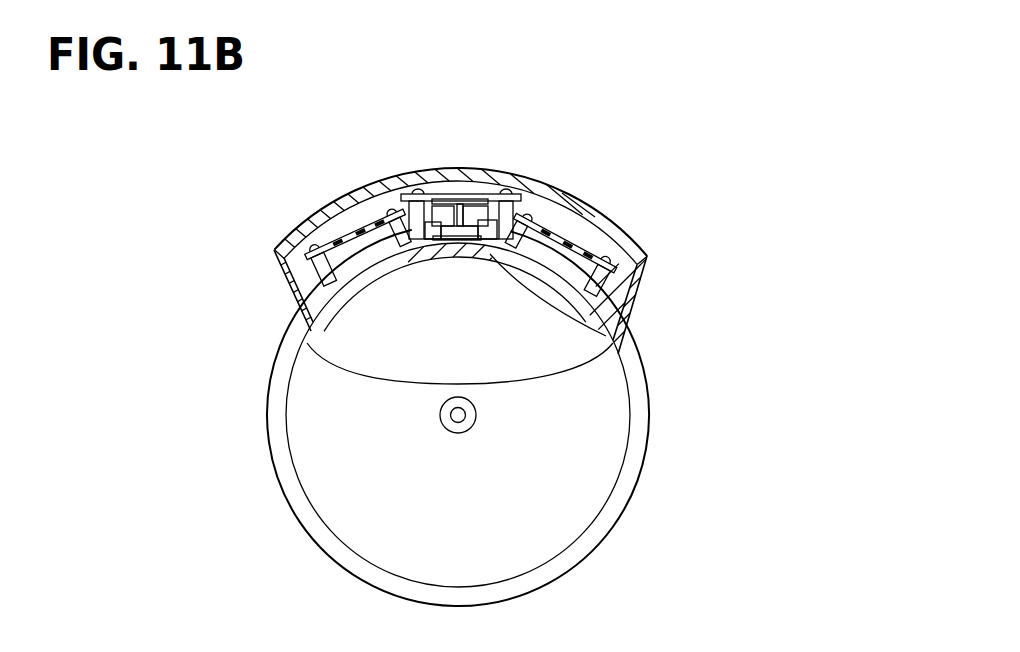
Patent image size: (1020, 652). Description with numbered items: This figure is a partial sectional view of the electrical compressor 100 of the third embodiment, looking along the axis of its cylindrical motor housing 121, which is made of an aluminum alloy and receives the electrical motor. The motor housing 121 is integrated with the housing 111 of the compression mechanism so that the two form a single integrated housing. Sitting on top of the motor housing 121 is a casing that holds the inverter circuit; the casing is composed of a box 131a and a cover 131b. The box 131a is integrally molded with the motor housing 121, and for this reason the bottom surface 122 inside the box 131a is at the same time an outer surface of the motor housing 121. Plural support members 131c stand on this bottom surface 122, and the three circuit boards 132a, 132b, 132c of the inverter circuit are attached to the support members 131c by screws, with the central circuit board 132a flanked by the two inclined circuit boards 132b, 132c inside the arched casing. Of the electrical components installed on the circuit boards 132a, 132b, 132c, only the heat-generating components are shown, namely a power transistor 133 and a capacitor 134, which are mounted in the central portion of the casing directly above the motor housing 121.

The compressor 100 is at (476, 224).
The housing 111 is at (637, 397).
The motor housing 121 is at (605, 443).
The bottom surface 122 is at (590, 324).
The box 131a is at (690, 267).
The cover 131b is at (592, 215).
The support members 131c is at (287, 284).
The circuit board 132a is at (460, 199).
The circuit board 132b is at (357, 233).
The circuit board 132c is at (552, 225).
The power transistor 133 is at (447, 215).
The capacitor 134 is at (473, 212).